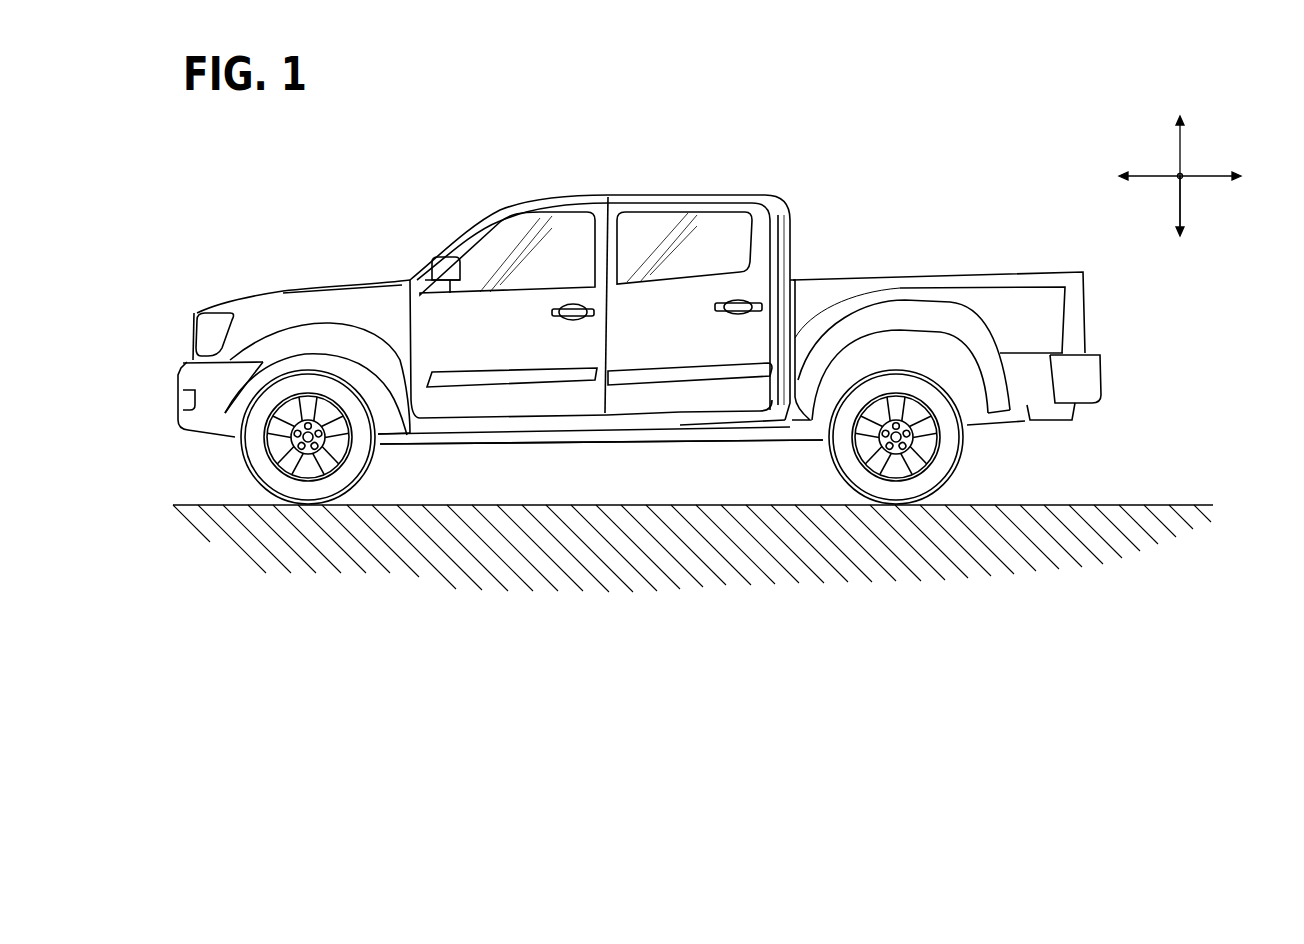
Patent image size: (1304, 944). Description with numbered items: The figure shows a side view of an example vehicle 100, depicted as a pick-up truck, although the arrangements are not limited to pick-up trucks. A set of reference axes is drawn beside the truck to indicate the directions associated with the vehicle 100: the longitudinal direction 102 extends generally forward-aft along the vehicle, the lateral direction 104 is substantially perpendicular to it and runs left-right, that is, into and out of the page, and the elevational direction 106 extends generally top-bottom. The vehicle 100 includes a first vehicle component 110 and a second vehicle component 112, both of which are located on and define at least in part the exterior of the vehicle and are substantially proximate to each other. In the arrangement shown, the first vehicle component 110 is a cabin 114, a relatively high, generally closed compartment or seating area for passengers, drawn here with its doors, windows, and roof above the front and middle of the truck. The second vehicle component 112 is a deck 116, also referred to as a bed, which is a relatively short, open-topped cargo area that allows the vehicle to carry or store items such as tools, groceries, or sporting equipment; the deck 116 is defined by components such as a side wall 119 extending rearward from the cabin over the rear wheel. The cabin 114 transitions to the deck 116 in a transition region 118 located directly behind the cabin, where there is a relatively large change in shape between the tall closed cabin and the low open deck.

The vehicle 100 is at (785, 164).
The longitudinal direction 102 is at (1213, 178).
The lateral direction 104 is at (1181, 175).
The elevational direction 106 is at (1183, 210).
The first vehicle component 110 is at (742, 442).
The second vehicle component 112 is at (904, 271).
The cabin 114 is at (770, 412).
The deck 116 is at (888, 296).
The transition region 118 is at (797, 231).
The side wall 119 is at (836, 290).